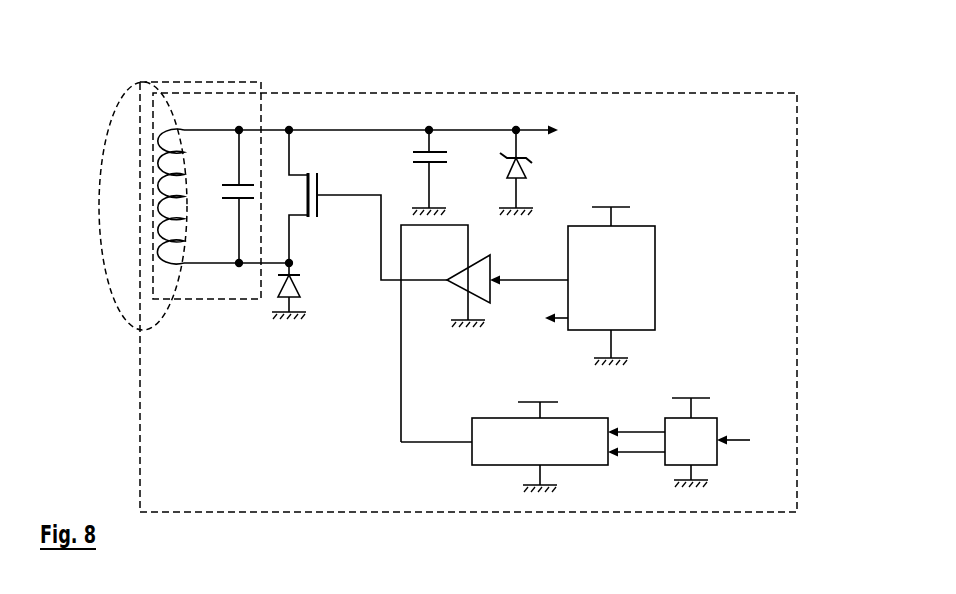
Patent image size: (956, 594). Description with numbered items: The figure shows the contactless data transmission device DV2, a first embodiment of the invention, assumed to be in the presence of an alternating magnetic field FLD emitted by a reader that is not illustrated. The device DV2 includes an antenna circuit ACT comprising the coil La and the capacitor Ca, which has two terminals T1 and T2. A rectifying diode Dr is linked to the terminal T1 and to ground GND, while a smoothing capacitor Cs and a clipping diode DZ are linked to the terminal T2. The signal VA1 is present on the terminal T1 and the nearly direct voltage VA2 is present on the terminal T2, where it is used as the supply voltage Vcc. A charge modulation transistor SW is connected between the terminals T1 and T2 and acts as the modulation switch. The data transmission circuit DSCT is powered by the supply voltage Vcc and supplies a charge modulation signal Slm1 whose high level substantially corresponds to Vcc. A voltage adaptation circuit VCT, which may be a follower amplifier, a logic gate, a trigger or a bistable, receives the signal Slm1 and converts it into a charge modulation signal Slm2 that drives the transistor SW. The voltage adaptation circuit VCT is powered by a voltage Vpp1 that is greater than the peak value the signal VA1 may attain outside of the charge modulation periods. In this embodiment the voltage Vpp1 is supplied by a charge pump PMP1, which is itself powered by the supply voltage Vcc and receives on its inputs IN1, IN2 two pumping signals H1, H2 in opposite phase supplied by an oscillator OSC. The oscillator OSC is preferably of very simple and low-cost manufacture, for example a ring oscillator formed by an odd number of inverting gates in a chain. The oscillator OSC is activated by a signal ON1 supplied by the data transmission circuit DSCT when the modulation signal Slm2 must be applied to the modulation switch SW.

The contactless device DV2 is at (192, 509).
The terminal T2 is at (239, 128).
The terminal T1 is at (239, 266).
The antenna circuit ACT is at (262, 121).
The alternating magnetic field FLD is at (116, 303).
The coil La is at (172, 264).
The capacitor Ca is at (232, 184).
The smoothing capacitor Cs is at (423, 167).
The clipping diode DZ is at (523, 178).
The charge modulation transistor SW is at (318, 203).
The rectifying diode Dr is at (302, 285).
The ground GND is at (333, 308).
The signal VA1 is at (238, 256).
The nearly direct voltage VA2 is at (242, 123).
The supply voltage Vcc is at (574, 131).
The voltage adaptation circuit VCT is at (462, 291).
The charge modulation signal Slm2 is at (423, 267).
The charge modulation signal Slm1 is at (529, 273).
The voltage Vpp1 is at (453, 338).
The signal ON1 is at (647, 379).
The data transmission circuit DSCT is at (590, 289).
The charge pump PMP1 is at (519, 451).
The input IN1 is at (596, 432).
The input IN2 is at (596, 452).
The pumping signal H1 is at (636, 425).
The pumping signal H2 is at (636, 446).
The oscillator OSC is at (677, 451).